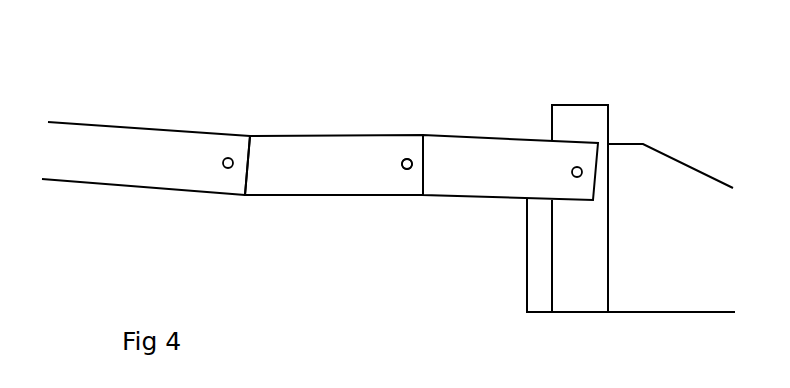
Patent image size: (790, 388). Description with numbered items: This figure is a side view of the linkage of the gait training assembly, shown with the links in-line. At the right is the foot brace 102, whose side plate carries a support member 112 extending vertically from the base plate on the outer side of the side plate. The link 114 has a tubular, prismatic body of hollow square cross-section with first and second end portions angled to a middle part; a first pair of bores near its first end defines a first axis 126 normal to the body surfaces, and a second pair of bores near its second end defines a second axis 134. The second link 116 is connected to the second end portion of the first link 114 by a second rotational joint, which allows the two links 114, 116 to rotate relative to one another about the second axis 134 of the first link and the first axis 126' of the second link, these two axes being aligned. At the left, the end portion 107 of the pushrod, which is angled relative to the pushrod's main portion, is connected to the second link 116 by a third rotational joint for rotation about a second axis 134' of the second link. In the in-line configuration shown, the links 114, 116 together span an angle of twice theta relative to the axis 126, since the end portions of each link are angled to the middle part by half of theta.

The foot brace 102 is at (685, 138).
The end portion 107 is at (146, 158).
The support member 112 is at (567, 208).
The link 114 is at (510, 167).
The second link 116 is at (334, 165).
The first axis 126 is at (577, 97).
The first axis of the second link 126' is at (407, 164).
The second axis 134 is at (403, 93).
The second axis of the second link 134' is at (228, 89).